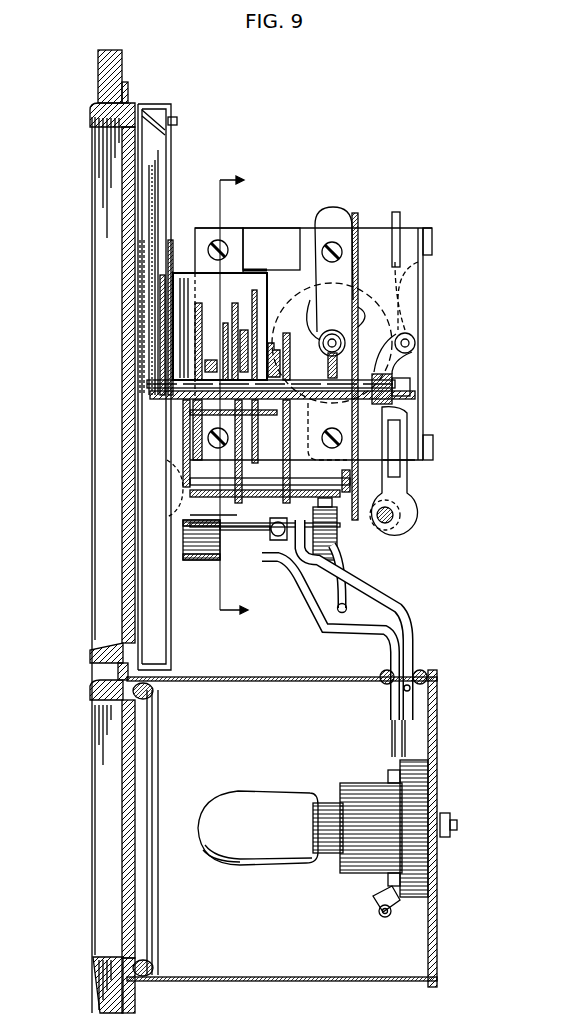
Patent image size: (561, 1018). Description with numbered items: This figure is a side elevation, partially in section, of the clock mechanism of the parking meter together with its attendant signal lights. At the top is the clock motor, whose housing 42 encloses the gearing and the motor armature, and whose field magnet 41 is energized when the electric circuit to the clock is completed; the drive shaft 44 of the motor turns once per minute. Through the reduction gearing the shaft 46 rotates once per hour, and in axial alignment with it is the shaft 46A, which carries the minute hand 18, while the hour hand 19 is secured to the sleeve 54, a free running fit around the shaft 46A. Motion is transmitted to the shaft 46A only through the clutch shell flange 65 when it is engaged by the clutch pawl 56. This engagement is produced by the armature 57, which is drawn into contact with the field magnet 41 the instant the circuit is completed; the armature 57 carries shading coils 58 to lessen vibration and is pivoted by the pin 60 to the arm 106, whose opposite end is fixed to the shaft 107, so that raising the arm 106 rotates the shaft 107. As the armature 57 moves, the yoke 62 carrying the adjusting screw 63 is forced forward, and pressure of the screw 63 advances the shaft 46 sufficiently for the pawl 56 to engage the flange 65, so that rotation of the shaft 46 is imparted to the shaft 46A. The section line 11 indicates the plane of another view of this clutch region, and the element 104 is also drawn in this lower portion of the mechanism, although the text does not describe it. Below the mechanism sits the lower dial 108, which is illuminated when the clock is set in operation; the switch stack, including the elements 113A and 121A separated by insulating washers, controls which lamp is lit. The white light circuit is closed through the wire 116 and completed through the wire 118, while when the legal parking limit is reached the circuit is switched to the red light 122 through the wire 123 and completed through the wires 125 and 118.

The section line 11 is at (249, 395).
The minute hand 18 is at (152, 173).
The hour hand 19 is at (172, 217).
The field magnet 41 is at (273, 229).
The housing 42 is at (367, 297).
The drive shaft 44 is at (332, 340).
The shaft 46 is at (412, 365).
The shaft 46A is at (150, 385).
The sleeve 54 is at (160, 398).
The clutch pawl 56 is at (270, 320).
The armature 57 is at (422, 290).
The shading coils 58 is at (398, 212).
The pin 60 is at (413, 343).
The yoke 62 is at (388, 405).
The adjusting screw 63 is at (410, 392).
The clutch shell flange 65 is at (291, 458).
The rod 104 is at (350, 525).
The arm 106 is at (400, 512).
The shaft 107 is at (388, 523).
The lower dial 108 is at (123, 853).
The switch element 113A is at (228, 560).
The wire 116 is at (393, 617).
The wire 118 is at (347, 578).
The switch element 121A is at (236, 560).
The red light 122 is at (238, 790).
The wire 123 is at (347, 638).
The wire 125 is at (380, 913).